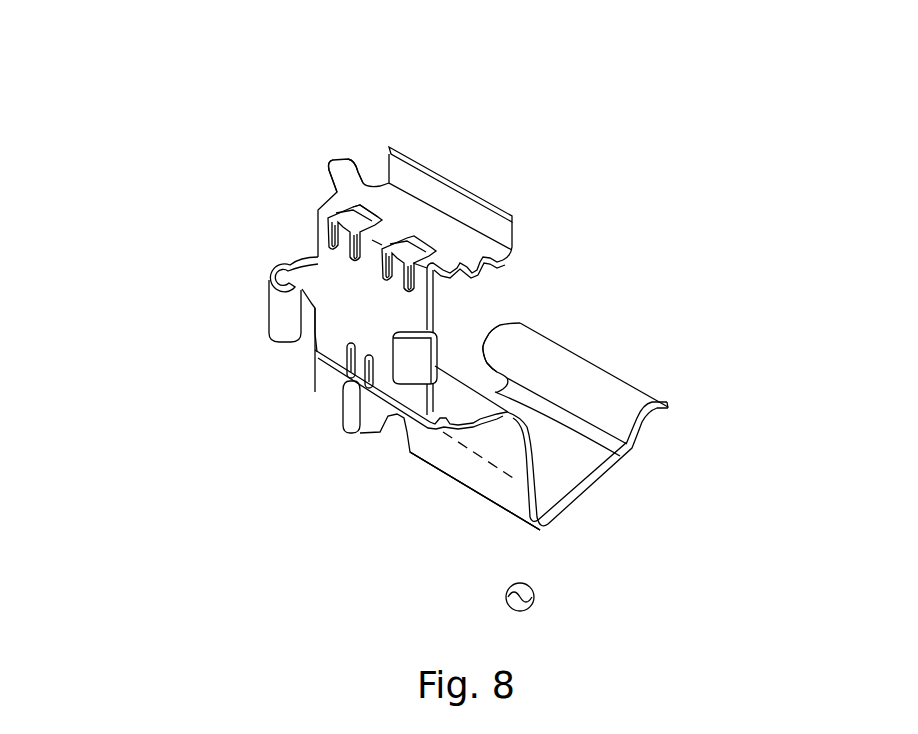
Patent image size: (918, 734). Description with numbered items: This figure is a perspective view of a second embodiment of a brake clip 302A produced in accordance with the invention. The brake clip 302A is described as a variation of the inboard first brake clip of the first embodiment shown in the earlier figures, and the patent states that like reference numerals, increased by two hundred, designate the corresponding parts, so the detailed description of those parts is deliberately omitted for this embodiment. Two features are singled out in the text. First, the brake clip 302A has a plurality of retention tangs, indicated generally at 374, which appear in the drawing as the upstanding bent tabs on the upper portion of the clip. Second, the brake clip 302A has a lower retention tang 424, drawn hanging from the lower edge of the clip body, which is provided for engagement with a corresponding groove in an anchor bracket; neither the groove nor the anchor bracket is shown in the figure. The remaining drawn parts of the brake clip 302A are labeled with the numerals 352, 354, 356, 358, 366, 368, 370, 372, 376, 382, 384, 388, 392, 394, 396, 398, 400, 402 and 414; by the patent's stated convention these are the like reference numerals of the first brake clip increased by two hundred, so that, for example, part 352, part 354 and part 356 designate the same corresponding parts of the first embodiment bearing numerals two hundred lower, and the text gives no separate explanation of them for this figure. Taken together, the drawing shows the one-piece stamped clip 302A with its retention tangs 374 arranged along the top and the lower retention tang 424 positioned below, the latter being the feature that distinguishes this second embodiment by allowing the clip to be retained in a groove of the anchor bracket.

The brake clip 302A is at (505, 108).
The contact body 352 is at (530, 543).
The base plate 354 is at (314, 380).
The neck portion 356 is at (379, 203).
The lower plate 358 is at (456, 453).
The hook 366 is at (280, 260).
The rolled tab 368 is at (281, 326).
The retention tab 370 is at (425, 360).
The lobe 372 is at (340, 165).
The retention tangs 374 is at (402, 227).
The notch 376 is at (497, 275).
The back wall 382 is at (516, 236).
The top flange 384 is at (483, 200).
The lower tab 388 is at (437, 447).
The pin 392 is at (350, 403).
The front flange 394 is at (577, 483).
The curved plate 396 is at (592, 377).
The trough surface 398 is at (540, 498).
The bend 400 is at (519, 583).
The side flange 402 is at (540, 530).
The slot 414 is at (463, 418).
The lower retention tang 424 is at (352, 428).